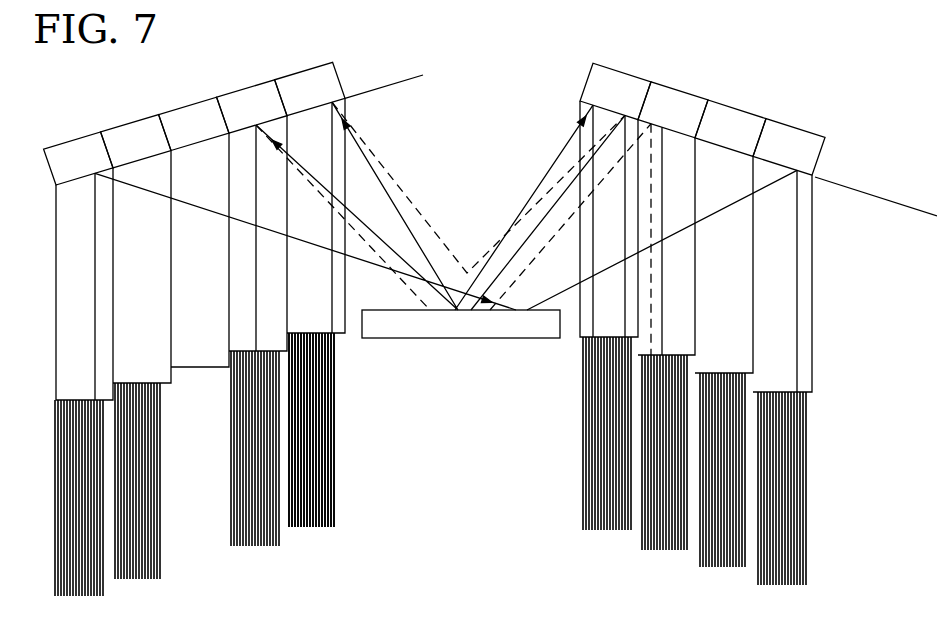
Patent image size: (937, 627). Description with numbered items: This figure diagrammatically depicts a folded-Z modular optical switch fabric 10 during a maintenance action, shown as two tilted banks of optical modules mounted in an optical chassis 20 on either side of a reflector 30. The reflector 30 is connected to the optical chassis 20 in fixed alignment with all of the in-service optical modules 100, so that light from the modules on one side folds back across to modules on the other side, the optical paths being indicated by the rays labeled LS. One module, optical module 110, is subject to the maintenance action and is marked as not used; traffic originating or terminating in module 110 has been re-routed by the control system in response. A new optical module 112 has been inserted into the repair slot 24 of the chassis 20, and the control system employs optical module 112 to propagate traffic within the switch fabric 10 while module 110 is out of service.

The folded-Z modular optical switch fabric 10 is at (763, 95).
The optical chassis 20 is at (372, 86).
The repair slot 24 is at (827, 183).
The reflector 30 is at (510, 339).
The in-service optical module 100 is at (340, 323).
The optical module subject to maintenance action 110 is at (193, 116).
The new optical module 112 is at (58, 212).
The light spot paths LS is at (377, 163).